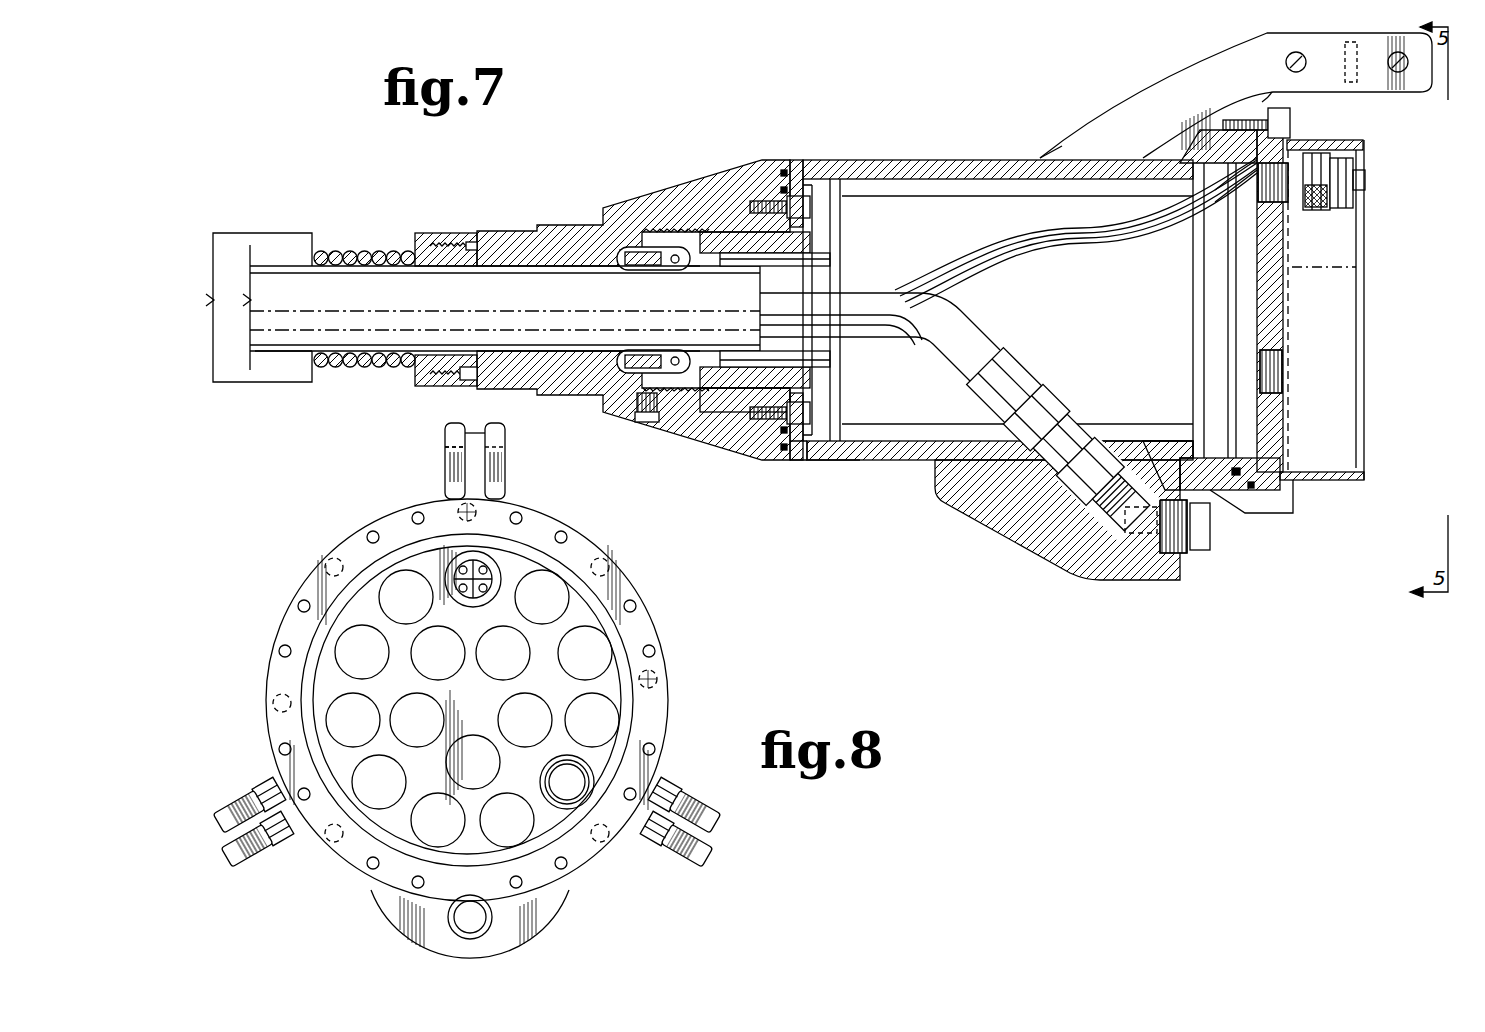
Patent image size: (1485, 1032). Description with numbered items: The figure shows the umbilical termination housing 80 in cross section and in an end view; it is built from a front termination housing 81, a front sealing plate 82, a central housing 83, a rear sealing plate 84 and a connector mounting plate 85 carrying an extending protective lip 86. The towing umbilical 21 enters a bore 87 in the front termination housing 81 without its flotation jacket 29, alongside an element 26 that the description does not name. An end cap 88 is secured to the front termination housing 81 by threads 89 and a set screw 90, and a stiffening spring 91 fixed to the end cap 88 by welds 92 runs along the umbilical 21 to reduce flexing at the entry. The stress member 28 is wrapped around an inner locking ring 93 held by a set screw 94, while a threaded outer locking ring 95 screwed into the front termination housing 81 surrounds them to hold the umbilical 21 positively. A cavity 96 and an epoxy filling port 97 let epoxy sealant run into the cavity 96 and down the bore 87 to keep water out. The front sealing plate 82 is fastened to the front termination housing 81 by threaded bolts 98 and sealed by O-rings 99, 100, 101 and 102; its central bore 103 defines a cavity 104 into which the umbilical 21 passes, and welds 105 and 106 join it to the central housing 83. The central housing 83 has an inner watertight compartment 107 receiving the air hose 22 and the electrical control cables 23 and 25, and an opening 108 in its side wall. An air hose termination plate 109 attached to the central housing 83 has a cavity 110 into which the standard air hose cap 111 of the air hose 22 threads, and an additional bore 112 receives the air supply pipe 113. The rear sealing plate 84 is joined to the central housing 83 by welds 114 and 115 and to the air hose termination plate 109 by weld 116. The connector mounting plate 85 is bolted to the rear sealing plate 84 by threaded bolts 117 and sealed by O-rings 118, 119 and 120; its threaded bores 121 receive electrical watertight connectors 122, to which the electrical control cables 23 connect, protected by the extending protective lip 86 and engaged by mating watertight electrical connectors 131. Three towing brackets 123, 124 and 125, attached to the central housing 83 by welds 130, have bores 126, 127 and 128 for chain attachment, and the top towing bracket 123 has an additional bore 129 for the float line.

In FIG. 7, the towing umbilical 21 is at (248, 330).
In FIG. 7, the air hose 22 is at (902, 303).
In FIG. 7, the electrical control cables 23 is at (1002, 228).
In FIG. 7, the electrical control cables 25 is at (836, 290).
In FIG. 7, the shaft 26 is at (585, 308).
In FIG. 7, the stress member 28 is at (290, 353).
In FIG. 7, the flotation jacket 29 is at (283, 240).
In FIG. 7, the umbilical termination housing 80 is at (975, 591).
In FIG. 7, the front termination housing 81 is at (560, 232).
In FIG. 7, the front sealing plate 82 is at (812, 462).
In FIG. 7, the central housing 83 is at (968, 165).
In FIG. 7, the rear sealing plate 84 is at (1168, 150).
In FIG. 7, the connector mounting plate 85 is at (1276, 428).
In FIG. 7, the extending protective lip 86 is at (1331, 484).
In FIG. 8, the extending protective lip 86 is at (292, 706).
In FIG. 7, the bore 87 is at (432, 384).
In FIG. 7, the end cap 88 is at (448, 232).
In FIG. 7, the threads 89 is at (471, 240).
In FIG. 7, the set screw 90 is at (468, 381).
In FIG. 7, the stiffening spring 91 is at (372, 370).
In FIG. 7, the welds 92 is at (413, 250).
In FIG. 7, the inner locking ring 93 is at (650, 252).
In FIG. 7, the set screw 94 is at (671, 256).
In FIG. 7, the threaded outer locking ring 95 is at (716, 226).
In FIG. 7, the cavity 96 is at (617, 366).
In FIG. 7, the epoxy filling port 97 is at (648, 422).
In FIG. 7, the threaded bolts 98 is at (838, 198).
In FIG. 7, the O-ring 99 is at (760, 204).
In FIG. 7, the O-ring 100 is at (742, 396).
In FIG. 7, the O-ring 101 is at (786, 170).
In FIG. 7, the O-ring 102 is at (800, 456).
In FIG. 7, the central bore 103 is at (786, 373).
In FIG. 7, the cavity 104 is at (812, 258).
In FIG. 7, the weld 105 is at (806, 168).
In FIG. 7, the weld 106 is at (843, 440).
In FIG. 7, the inner watertight compartment 107 is at (1068, 314).
In FIG. 7, the opening 108 is at (1130, 450).
In FIG. 7, the air hose termination plate 109 is at (1002, 514).
In FIG. 8, the air hose termination plate 109 is at (545, 934).
In FIG. 7, the cavity 110 is at (1075, 520).
In FIG. 7, the standard air hose cap 111 is at (1072, 440).
In FIG. 7, the additional bore 112 is at (1146, 536).
In FIG. 7, the air supply pipe 113 is at (1200, 556).
In FIG. 8, the air supply pipe 113 is at (447, 920).
In FIG. 7, the weld 114 is at (1172, 455).
In FIG. 7, the weld 115 is at (1197, 410).
In FIG. 7, the weld 116 is at (1188, 478).
In FIG. 7, the threaded bolts 117 is at (1291, 122).
In FIG. 8, the threaded bolts 117 is at (452, 512).
In FIG. 7, the O-ring 118 is at (1240, 136).
In FIG. 7, the O-ring 119 is at (1250, 133).
In FIG. 7, the O-ring 120 is at (1227, 160).
In FIG. 7, the threaded bores 121 is at (1292, 253).
In FIG. 7, the electrical watertight connectors 122 is at (1352, 186).
In FIG. 8, the electrical watertight connectors 122 is at (482, 578).
In FIG. 7, the towing bracket 123 is at (1132, 100).
In FIG. 8, the towing bracket 123 is at (500, 452).
In FIG. 8, the towing bracket 124 is at (722, 822).
In FIG. 8, the towing bracket 125 is at (215, 828).
In FIG. 7, the bore 126 is at (1405, 75).
In FIG. 8, the bore 126 is at (443, 458).
In FIG. 8, the bore 127 is at (690, 868).
In FIG. 8, the bore 128 is at (262, 866).
In FIG. 7, the additional bore 129 is at (1286, 63).
In FIG. 7, the welds 130 is at (1041, 157).
In FIG. 7, the mating watertight electrical connectors 131 is at (1273, 95).